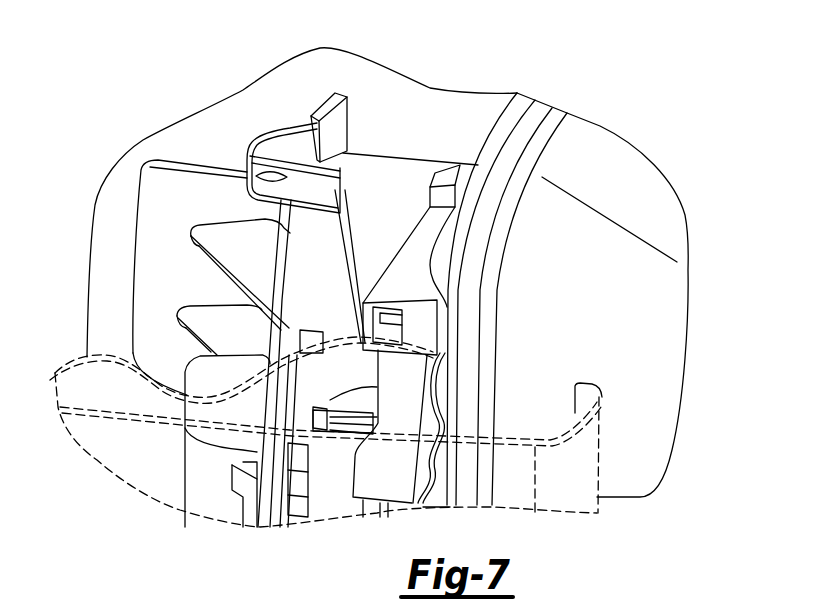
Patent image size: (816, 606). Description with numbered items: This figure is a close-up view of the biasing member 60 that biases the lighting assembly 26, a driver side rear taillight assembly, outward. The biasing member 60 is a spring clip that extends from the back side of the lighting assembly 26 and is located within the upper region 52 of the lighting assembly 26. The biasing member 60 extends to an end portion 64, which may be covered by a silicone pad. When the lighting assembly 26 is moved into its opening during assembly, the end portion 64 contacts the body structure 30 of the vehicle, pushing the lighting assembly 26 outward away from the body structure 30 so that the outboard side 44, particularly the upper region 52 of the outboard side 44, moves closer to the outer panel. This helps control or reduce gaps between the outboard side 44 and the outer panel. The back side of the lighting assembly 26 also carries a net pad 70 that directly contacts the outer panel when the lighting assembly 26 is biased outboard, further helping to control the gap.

The lighting assembly 26 is at (652, 298).
The body structure 30 is at (437, 132).
The outboard side 44 is at (619, 440).
The upper region 52 is at (607, 334).
The biasing member 60 is at (257, 133).
The end portion 64 is at (347, 106).
The net pad 70 is at (387, 323).